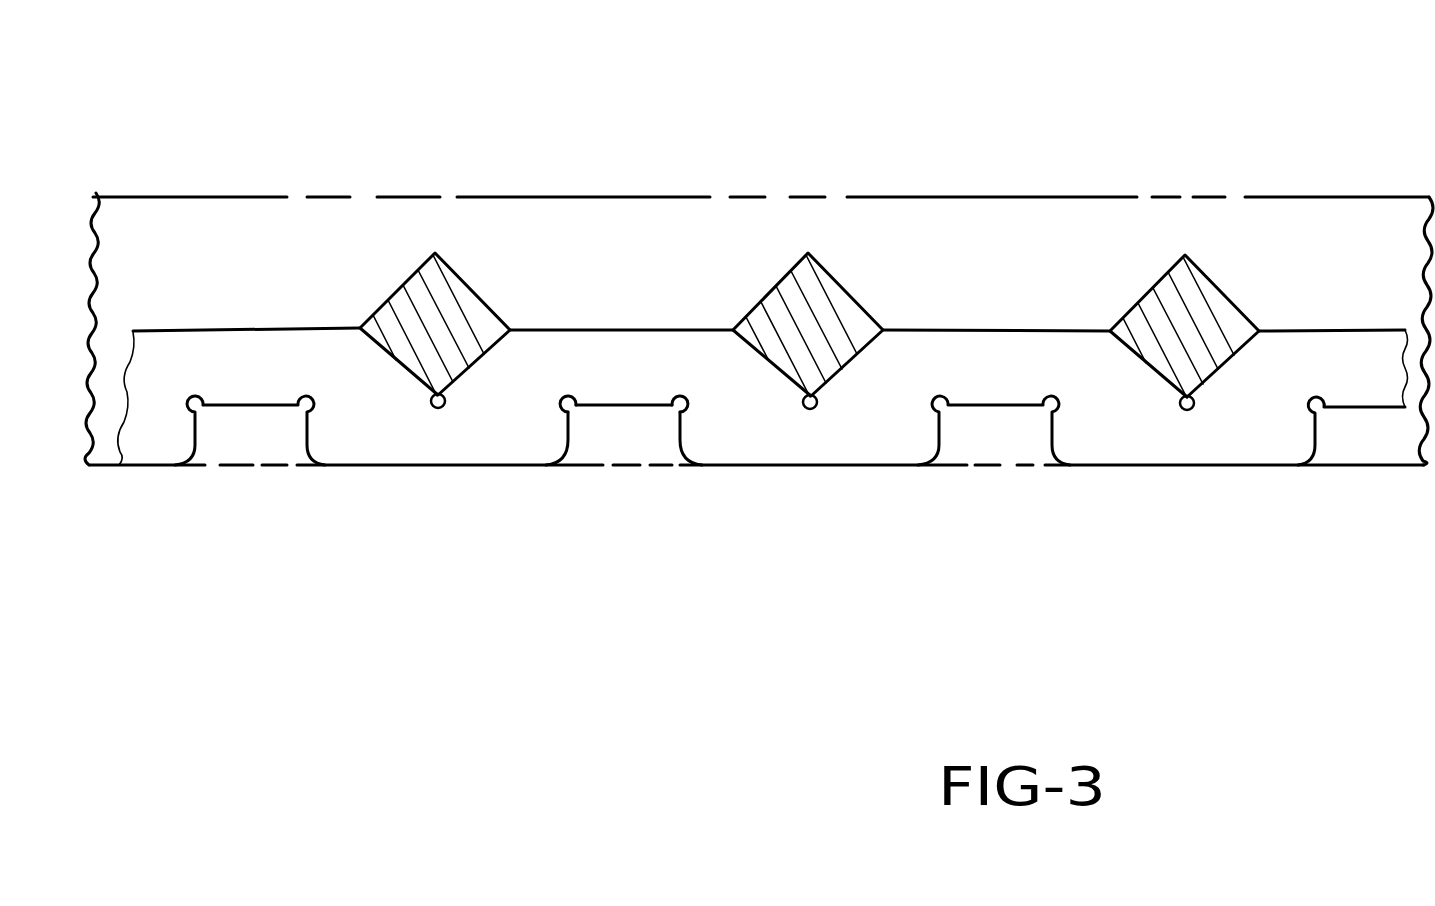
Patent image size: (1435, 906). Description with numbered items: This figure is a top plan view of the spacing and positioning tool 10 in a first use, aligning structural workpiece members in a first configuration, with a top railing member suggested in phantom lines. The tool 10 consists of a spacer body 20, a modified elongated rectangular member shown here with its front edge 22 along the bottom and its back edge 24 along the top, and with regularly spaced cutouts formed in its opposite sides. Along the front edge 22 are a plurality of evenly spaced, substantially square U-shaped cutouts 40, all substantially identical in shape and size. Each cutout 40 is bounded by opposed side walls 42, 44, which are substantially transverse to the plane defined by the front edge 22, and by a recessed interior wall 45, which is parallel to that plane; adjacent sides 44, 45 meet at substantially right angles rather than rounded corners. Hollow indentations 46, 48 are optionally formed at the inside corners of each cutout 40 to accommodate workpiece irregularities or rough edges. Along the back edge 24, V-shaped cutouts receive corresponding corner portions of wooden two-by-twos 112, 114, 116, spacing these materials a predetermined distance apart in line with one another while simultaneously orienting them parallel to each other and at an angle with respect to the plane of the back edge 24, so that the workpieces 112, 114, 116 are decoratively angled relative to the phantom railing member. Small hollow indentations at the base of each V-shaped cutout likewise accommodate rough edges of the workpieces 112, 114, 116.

The spacing and positioning tool 10 is at (1162, 595).
The spacer body 20 is at (755, 378).
The front edge 22 is at (829, 468).
The back edge 24 is at (161, 331).
The substantially square U-shaped cutout 40 is at (754, 454).
The side wall 42 is at (580, 440).
The side wall 44 is at (678, 430).
The recessed interior wall 45 is at (634, 408).
The hollow indentation 46 is at (561, 392).
The hollow indentation 48 is at (681, 392).
The wooden two-by-two 112 is at (447, 262).
The wooden two-by-two 114 is at (820, 262).
The wooden two-by-two 116 is at (1205, 268).